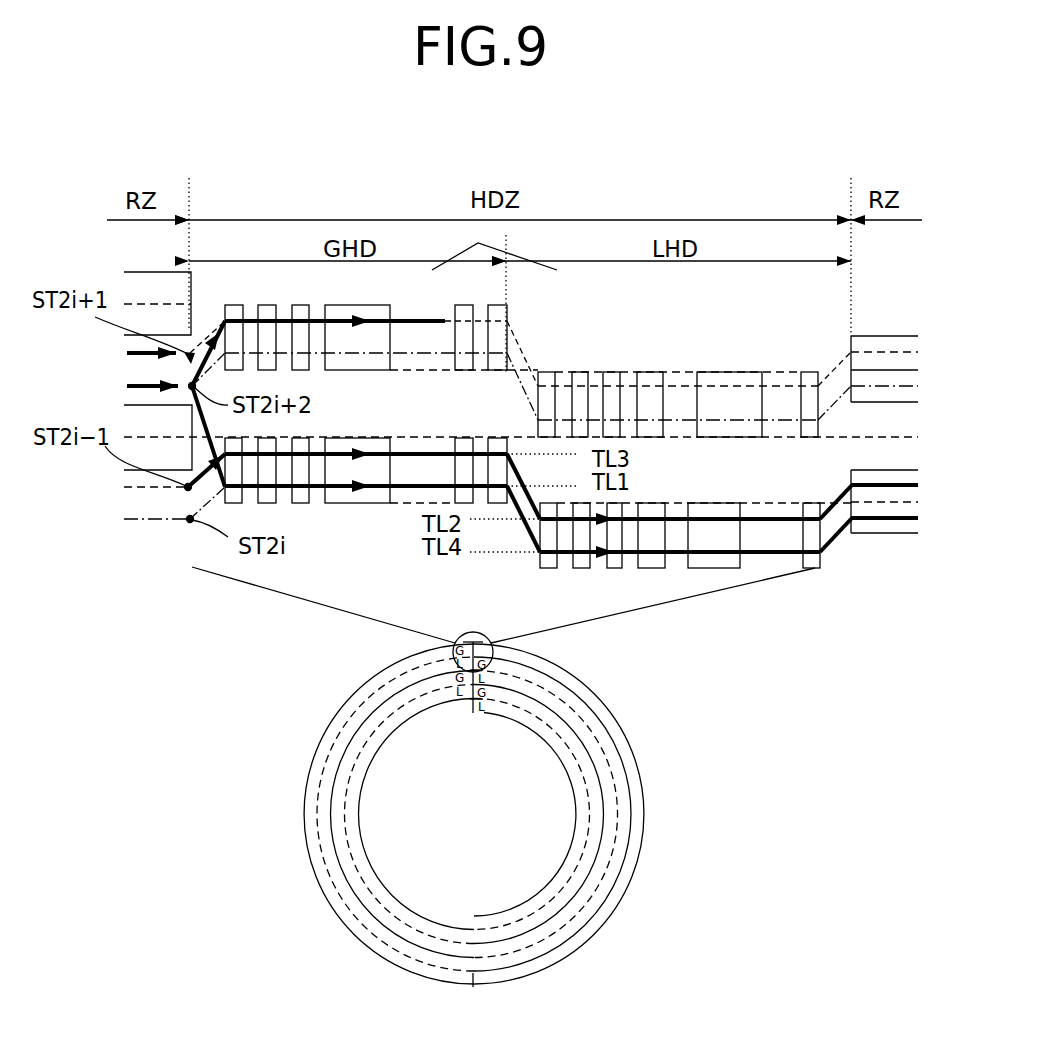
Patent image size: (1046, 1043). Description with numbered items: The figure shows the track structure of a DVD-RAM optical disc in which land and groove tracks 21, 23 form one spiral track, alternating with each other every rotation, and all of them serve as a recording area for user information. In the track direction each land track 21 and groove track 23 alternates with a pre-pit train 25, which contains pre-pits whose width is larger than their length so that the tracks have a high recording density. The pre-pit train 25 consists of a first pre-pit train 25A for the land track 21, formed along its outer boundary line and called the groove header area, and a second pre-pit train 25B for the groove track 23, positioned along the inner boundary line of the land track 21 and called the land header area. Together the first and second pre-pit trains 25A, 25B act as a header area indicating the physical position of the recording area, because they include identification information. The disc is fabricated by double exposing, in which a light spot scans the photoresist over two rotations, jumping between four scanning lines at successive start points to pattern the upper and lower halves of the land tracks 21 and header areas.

The land track 21 is at (165, 300).
The groove track 23 is at (533, 787).
The pre-pit train 25 is at (636, 324).
The first pre-pit train 25A is at (362, 310).
The second pre-pit train 25B is at (616, 372).